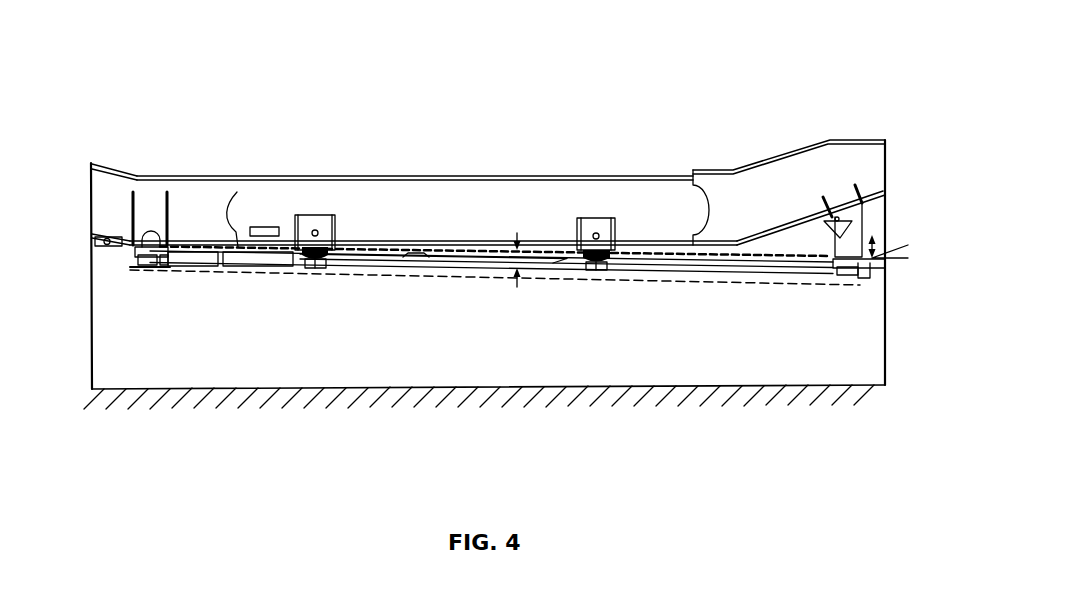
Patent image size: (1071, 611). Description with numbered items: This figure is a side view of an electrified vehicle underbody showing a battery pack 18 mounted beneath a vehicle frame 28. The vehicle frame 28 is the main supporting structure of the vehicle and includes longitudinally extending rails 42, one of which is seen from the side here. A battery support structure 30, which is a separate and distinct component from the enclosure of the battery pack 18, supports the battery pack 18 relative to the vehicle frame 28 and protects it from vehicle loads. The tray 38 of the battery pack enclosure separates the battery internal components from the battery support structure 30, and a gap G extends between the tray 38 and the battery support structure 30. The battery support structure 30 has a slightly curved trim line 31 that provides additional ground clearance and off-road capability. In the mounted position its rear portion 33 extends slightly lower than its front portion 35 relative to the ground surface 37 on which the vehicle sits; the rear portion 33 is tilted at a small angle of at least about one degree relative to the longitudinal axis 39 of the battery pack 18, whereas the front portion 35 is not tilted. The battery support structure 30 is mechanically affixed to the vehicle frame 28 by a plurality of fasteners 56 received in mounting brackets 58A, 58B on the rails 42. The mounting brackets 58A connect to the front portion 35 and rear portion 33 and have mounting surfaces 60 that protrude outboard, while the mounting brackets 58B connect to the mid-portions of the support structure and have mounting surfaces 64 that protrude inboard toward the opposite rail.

The vehicle frame 28 is at (510, 149).
The rails 42 is at (670, 188).
The mounting surfaces 60 is at (136, 232).
The mounting brackets 58A is at (151, 216).
The mounting brackets 58B is at (316, 207).
The longitudinal axis 39 is at (237, 192).
The mounting surfaces 64 is at (288, 245).
The fasteners 56 is at (142, 259).
The front portion 35 is at (152, 280).
The trim line 31 is at (328, 272).
The battery support structure 30 is at (437, 275).
The battery pack 18 is at (647, 264).
The tray 38 is at (714, 262).
The gap G is at (517, 282).
The rear portion 33 is at (873, 276).
The ground surface 37 is at (208, 393).